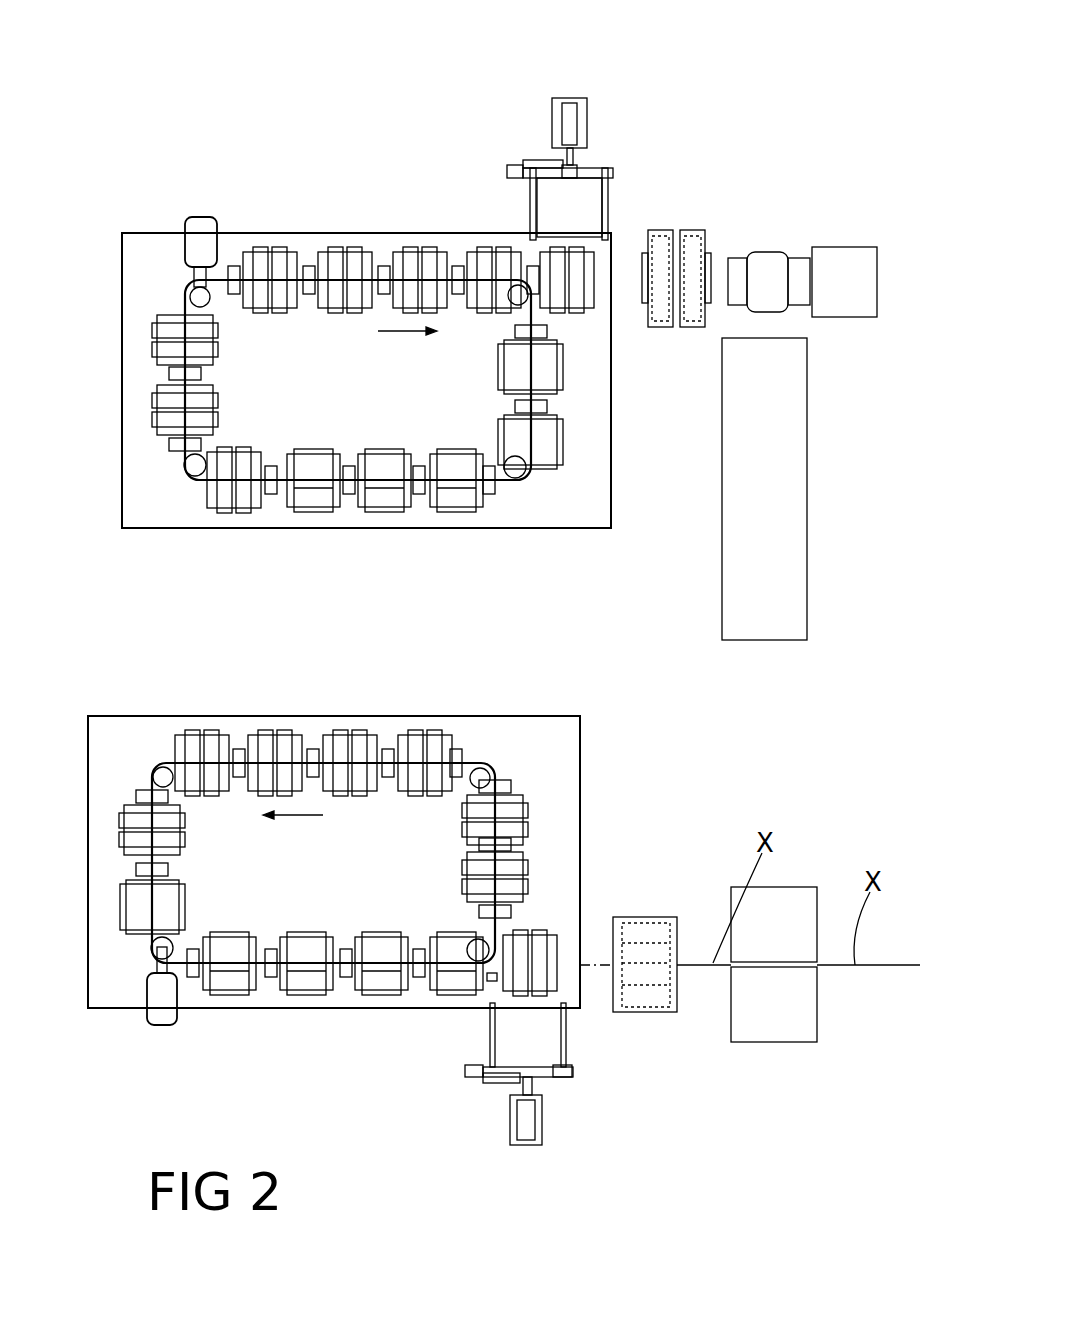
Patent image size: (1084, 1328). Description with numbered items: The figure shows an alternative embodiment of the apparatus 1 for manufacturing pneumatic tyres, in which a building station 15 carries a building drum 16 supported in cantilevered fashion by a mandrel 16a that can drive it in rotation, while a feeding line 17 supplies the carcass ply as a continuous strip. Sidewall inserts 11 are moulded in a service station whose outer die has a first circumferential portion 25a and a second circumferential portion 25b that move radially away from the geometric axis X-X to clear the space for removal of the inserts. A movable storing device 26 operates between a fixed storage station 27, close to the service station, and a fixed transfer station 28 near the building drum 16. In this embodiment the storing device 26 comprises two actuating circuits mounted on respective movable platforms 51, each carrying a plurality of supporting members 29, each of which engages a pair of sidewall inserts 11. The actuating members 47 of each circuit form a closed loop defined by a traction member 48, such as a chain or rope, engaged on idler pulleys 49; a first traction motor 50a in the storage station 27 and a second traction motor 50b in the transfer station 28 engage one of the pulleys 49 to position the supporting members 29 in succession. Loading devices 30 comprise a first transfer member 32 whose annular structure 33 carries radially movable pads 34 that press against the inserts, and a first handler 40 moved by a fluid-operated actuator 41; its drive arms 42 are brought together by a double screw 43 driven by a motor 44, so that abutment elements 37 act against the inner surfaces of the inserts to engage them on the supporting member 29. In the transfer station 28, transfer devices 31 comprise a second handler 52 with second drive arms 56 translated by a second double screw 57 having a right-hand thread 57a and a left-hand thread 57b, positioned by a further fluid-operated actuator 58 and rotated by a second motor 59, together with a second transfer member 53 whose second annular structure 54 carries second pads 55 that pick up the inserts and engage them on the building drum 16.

The apparatus 1 is at (297, 160).
The sidewall inserts 11 is at (520, 933).
The building station 15 is at (813, 218).
The building drum 16 is at (780, 296).
The mandrel 16a is at (868, 296).
The feeding line 17 is at (777, 497).
The first circumferential portion 25a is at (790, 907).
The second circumferential portion 25b is at (797, 1028).
The movable storing device 26 is at (182, 717).
The storage station 27 is at (592, 1077).
The transfer station 28 is at (460, 145).
The supporting members 29 is at (443, 250).
The loading devices 30 is at (572, 1032).
The transfer devices 31 is at (698, 218).
The first transfer member 32 is at (675, 915).
The annular structure 33 is at (677, 945).
The pads 34 is at (667, 975).
The abutment elements 37 is at (215, 985).
The first handler 40 is at (495, 1097).
The fluid-operated actuator 41 is at (522, 1147).
The drive arms 42 is at (525, 1045).
The double screw 43 is at (545, 1102).
The motor 44 is at (467, 1085).
The actuating members 47 is at (508, 495).
The traction member 48 is at (203, 508).
The idler pulleys 49 is at (185, 472).
The first traction motor 50a is at (160, 1013).
The second traction motor 50b is at (203, 233).
The movable platforms 51 is at (138, 242).
The second handler 52 is at (597, 88).
The second transfer member 53 is at (652, 340).
The second annular structure 54 is at (690, 330).
The second pads 55 is at (720, 262).
The second drive arms 56 is at (615, 203).
The second double screw 57 is at (582, 148).
The right-hand thread 57a is at (587, 160).
The left-hand thread 57b is at (540, 160).
The further fluid-operated actuator 58 is at (572, 98).
The second motor 59 is at (507, 177).